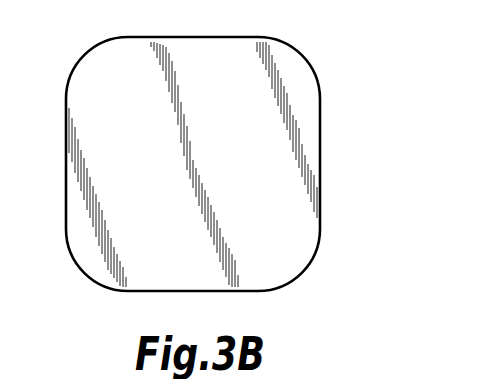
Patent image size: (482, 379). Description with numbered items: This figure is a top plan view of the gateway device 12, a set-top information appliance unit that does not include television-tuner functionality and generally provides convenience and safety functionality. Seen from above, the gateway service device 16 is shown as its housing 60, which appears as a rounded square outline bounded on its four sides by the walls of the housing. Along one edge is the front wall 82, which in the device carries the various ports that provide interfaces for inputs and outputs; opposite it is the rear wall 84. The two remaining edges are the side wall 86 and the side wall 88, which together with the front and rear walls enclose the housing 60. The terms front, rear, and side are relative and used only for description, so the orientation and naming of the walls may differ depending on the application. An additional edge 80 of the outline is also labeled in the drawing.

The gateway device 12 is at (320, 63).
The gateway service device 16 is at (322, 205).
The housing 60 is at (305, 252).
The bottom edge 80 is at (197, 291).
The front wall 82 is at (197, 37).
The rear wall 84 is at (320, 163).
The side wall 86 is at (65, 195).
The side wall 88 is at (86, 105).